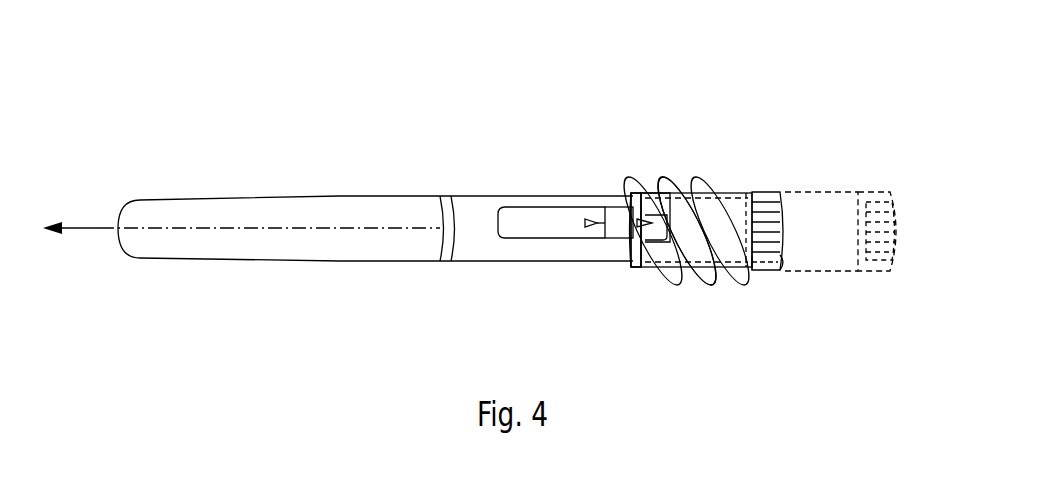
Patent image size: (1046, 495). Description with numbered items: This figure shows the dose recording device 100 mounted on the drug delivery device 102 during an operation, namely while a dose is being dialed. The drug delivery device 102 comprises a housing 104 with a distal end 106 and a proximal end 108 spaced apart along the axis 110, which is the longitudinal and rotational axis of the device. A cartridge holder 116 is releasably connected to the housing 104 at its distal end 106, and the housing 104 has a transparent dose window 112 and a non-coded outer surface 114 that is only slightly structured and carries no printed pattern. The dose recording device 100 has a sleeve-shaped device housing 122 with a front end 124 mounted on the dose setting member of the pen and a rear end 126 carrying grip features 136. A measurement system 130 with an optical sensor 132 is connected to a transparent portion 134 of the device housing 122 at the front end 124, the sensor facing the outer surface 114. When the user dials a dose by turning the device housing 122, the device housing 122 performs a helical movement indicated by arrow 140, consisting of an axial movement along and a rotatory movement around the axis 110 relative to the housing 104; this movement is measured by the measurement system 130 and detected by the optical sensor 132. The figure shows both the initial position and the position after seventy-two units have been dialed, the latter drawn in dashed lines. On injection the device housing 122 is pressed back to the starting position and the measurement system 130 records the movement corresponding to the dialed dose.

The dose recording device 100 is at (802, 100).
The drug delivery device 102 is at (360, 104).
The housing 104 is at (525, 185).
The distal end 106 is at (445, 196).
The proximal end 108 is at (730, 275).
The axis 110 is at (278, 228).
The dose window 112 is at (619, 252).
The non-coded outer surface 114 is at (524, 244).
The cartridge holder 116 is at (363, 252).
The device housing 122 is at (724, 180).
The front end 124 is at (617, 182).
The rear end 126 is at (786, 222).
The measurement system 130 is at (657, 197).
The optical sensor 132 is at (687, 231).
The portion 134 is at (763, 192).
The grip features 136 is at (785, 262).
The arrow 140 is at (750, 275).